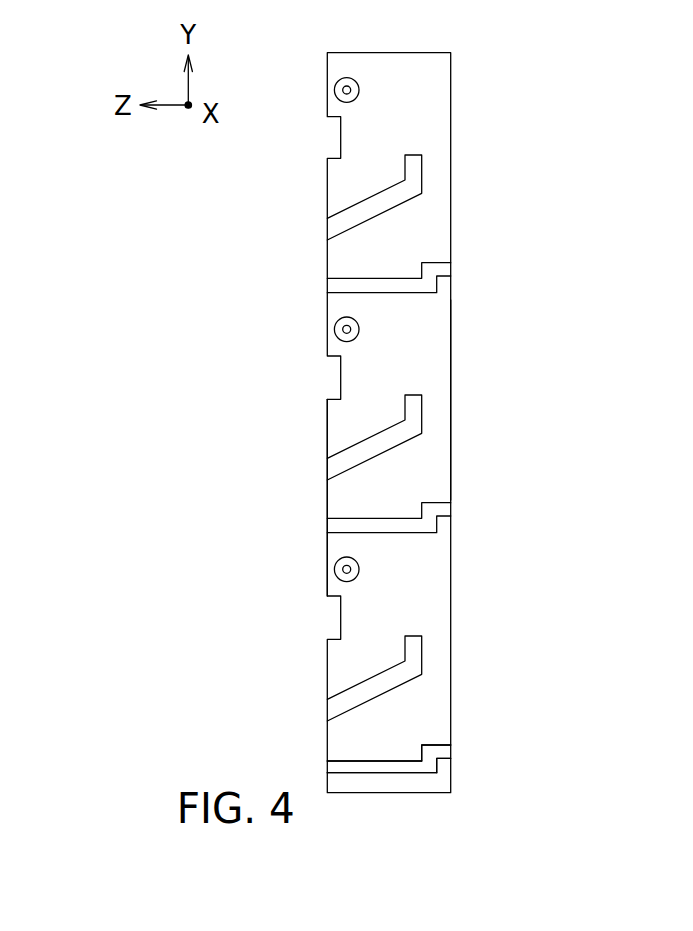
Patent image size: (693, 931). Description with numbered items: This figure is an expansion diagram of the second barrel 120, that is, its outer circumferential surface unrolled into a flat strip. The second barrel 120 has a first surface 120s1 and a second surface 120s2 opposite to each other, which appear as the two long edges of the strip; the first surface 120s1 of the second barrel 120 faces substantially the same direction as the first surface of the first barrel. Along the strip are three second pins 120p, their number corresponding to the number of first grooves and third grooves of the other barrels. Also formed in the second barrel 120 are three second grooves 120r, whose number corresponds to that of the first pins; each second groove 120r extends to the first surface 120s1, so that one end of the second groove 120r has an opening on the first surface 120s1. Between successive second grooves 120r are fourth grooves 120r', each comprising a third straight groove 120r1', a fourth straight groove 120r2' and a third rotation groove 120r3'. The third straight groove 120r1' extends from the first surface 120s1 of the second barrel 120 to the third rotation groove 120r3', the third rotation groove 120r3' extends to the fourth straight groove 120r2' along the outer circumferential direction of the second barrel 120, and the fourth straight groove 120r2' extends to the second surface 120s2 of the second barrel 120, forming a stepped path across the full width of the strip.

The second barrel 120 is at (303, 188).
The second pin 120p is at (334, 90).
The second groove 120r is at (449, 438).
The fourth groove 120r' is at (502, 545).
The third straight groove 120r1' is at (460, 793).
The fourth straight groove 120r2' is at (508, 719).
The third rotation groove 120r3' is at (512, 754).
The first surface 120s1 is at (325, 425).
The second surface 120s2 is at (452, 398).